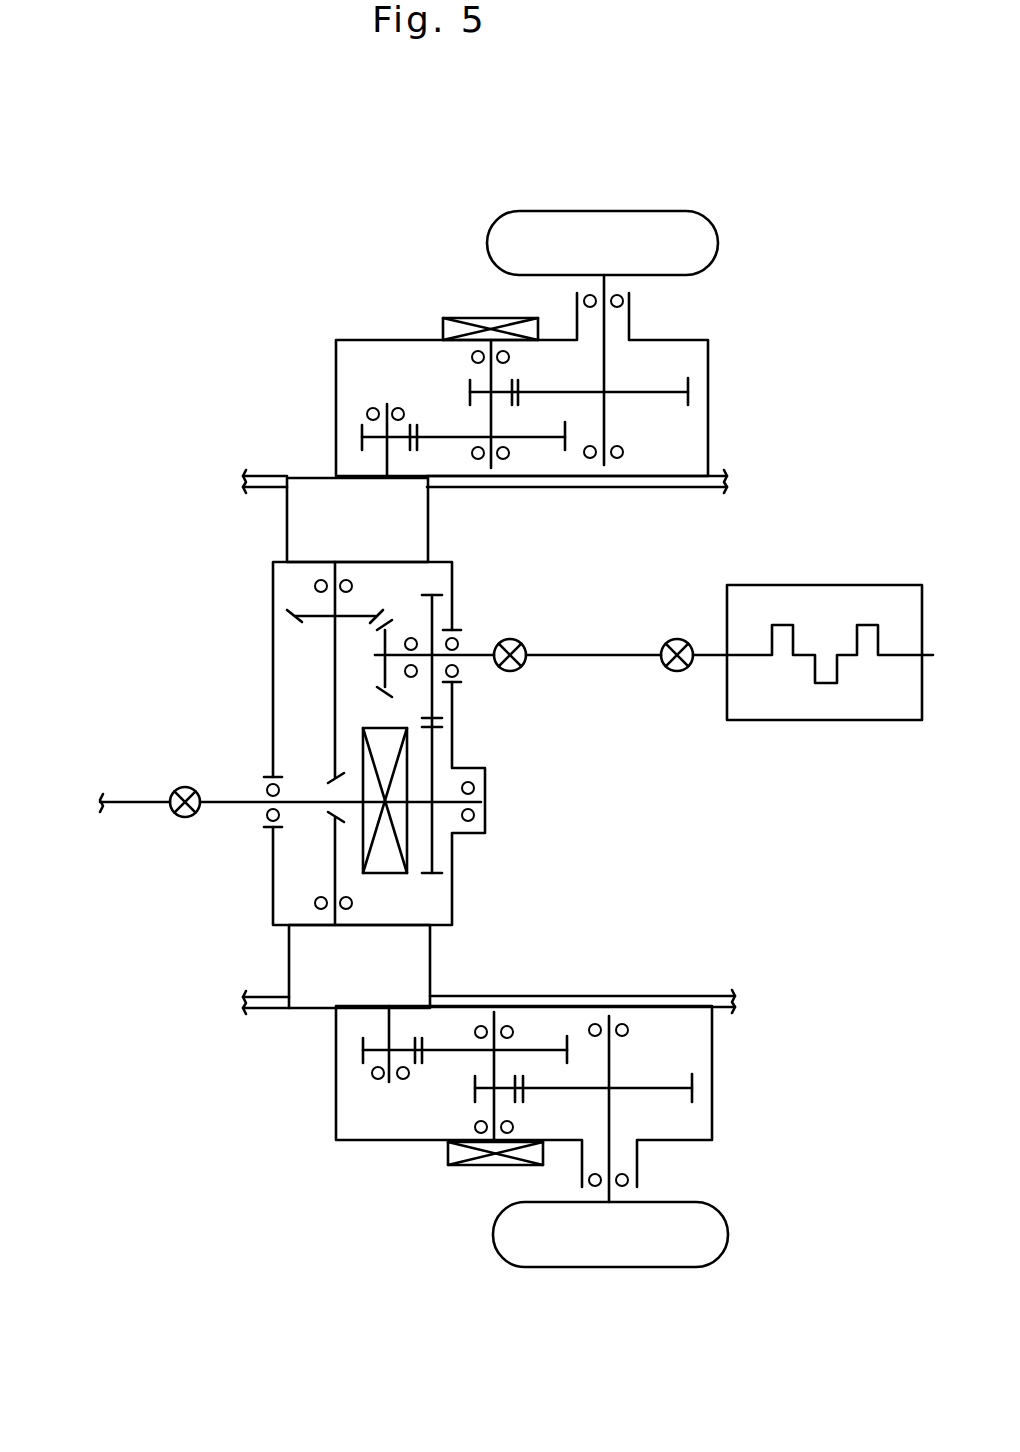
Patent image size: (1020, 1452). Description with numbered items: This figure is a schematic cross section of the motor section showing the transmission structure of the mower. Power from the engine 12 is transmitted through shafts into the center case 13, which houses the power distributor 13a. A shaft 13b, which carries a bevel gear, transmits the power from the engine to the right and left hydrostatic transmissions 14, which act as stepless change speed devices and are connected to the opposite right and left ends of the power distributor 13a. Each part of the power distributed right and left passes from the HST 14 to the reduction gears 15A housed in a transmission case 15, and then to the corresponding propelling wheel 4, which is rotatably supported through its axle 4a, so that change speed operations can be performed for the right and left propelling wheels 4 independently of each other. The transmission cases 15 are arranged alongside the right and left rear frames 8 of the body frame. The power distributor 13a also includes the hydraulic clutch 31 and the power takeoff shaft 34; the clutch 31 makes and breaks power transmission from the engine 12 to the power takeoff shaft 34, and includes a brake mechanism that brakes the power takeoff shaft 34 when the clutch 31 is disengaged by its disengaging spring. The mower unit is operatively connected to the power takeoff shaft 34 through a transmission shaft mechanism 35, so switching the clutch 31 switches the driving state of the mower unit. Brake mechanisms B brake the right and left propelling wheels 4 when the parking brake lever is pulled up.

The propelling wheel 4 is at (662, 212).
The axle 4a is at (607, 320).
The transmission case 15 is at (708, 414).
The reduction gears 15A is at (666, 378).
The brake mechanism B is at (475, 318).
The rear frame 8 is at (489, 742).
The hydrostatic transmission 14 is at (287, 520).
The center case 13 is at (268, 880).
The power distributor 13a is at (313, 645).
The shaft 13b is at (335, 702).
The hydraulic clutch 31 is at (473, 841).
The power takeoff shaft 34 is at (217, 802).
The transmission shaft mechanism 35 is at (130, 802).
The engine 12 is at (867, 720).